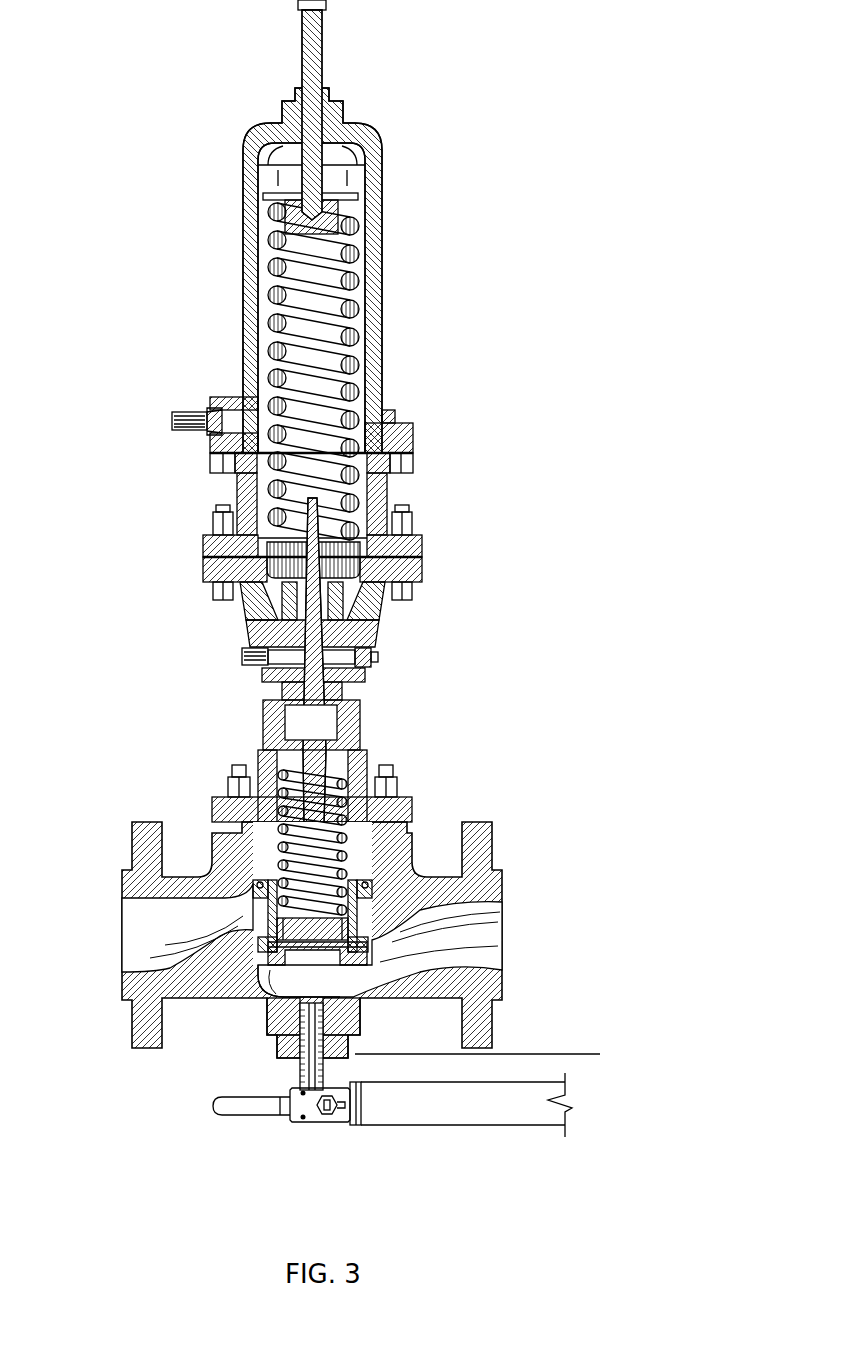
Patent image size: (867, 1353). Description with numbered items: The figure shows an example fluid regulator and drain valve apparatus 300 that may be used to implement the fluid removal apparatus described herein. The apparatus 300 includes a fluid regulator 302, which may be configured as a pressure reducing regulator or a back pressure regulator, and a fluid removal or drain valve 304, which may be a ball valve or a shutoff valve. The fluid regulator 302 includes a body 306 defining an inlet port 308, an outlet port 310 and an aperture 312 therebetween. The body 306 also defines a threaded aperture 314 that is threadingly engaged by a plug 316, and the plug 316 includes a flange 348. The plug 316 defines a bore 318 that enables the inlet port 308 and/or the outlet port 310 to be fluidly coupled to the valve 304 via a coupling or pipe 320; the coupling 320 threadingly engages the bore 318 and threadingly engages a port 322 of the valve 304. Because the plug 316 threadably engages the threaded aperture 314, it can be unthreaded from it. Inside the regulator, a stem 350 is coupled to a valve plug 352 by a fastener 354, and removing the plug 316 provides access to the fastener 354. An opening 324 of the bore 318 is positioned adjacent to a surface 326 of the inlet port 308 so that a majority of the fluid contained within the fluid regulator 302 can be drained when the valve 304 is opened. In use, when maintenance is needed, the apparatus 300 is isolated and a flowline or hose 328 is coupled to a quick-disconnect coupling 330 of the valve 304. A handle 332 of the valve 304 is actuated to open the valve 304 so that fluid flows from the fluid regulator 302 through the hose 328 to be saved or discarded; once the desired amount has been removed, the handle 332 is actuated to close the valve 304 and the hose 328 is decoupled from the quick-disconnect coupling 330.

The fluid regulator and drain valve apparatus 300 is at (478, 162).
The fluid regulator 302 is at (478, 455).
The fluid removal or drain valve 304 is at (303, 1150).
The body 306 is at (490, 820).
The inlet port 308 is at (502, 968).
The outlet port 310 is at (126, 960).
The aperture 312 is at (460, 925).
The threaded aperture 314 is at (352, 1012).
The plug 316 is at (287, 1053).
The bore 318 is at (287, 1042).
The coupling or pipe 320 is at (303, 1077).
The port 322 is at (325, 1090).
The opening 324 is at (262, 1005).
The surface 326 is at (465, 945).
The flowline or hose 328 is at (481, 1084).
The quick-disconnect coupling 330 is at (355, 1124).
The handle 332 is at (262, 1111).
The flange 348 is at (600, 1054).
The stem 350 is at (315, 770).
The valve plug 352 is at (362, 915).
The fastener 354 is at (305, 943).